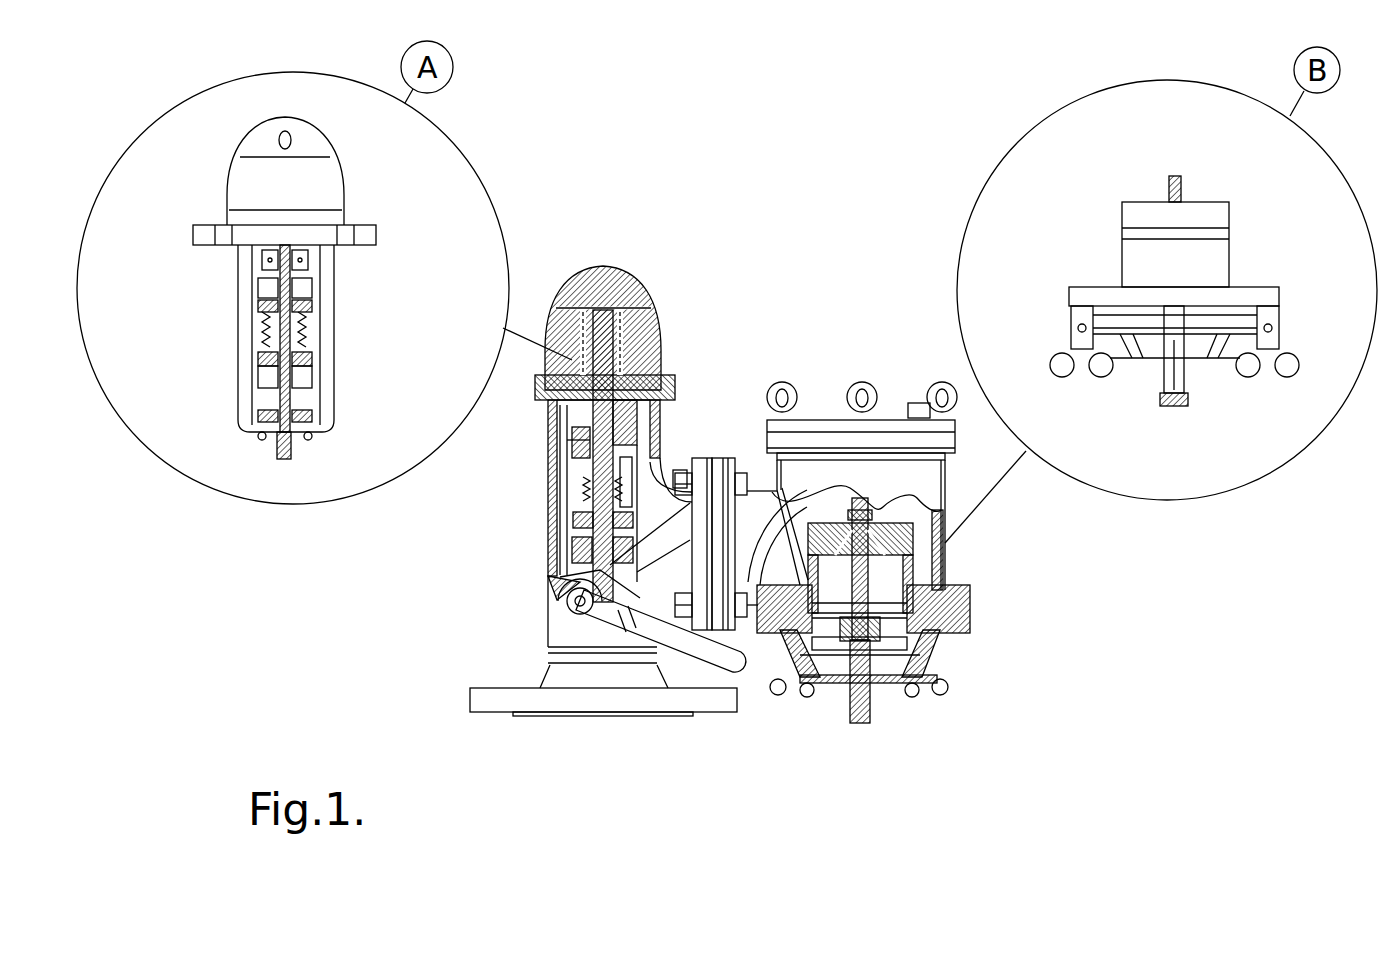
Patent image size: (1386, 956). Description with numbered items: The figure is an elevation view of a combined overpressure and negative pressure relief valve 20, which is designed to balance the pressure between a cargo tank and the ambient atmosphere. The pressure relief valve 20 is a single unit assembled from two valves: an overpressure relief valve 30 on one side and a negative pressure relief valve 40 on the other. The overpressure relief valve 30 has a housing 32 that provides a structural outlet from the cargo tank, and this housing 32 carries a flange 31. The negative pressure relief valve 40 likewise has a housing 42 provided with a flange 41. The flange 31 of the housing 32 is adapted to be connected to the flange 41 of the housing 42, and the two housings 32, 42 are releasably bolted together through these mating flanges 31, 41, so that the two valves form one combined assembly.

The combined overpressure and negative pressure relief valve 20 is at (737, 228).
The overpressure relief valve 30 is at (549, 502).
The flange 31 is at (708, 622).
The housing 32 is at (548, 457).
The negative pressure relief valve 40 is at (953, 560).
The flange 41 is at (722, 623).
The housing 42 is at (958, 573).